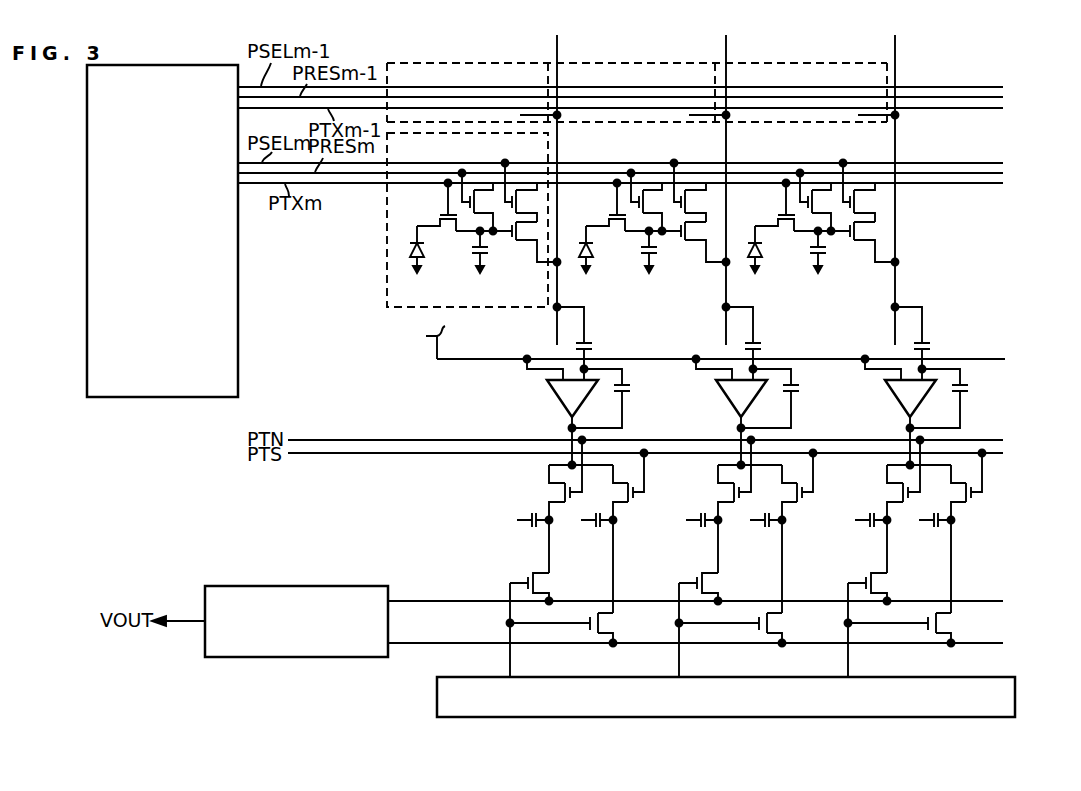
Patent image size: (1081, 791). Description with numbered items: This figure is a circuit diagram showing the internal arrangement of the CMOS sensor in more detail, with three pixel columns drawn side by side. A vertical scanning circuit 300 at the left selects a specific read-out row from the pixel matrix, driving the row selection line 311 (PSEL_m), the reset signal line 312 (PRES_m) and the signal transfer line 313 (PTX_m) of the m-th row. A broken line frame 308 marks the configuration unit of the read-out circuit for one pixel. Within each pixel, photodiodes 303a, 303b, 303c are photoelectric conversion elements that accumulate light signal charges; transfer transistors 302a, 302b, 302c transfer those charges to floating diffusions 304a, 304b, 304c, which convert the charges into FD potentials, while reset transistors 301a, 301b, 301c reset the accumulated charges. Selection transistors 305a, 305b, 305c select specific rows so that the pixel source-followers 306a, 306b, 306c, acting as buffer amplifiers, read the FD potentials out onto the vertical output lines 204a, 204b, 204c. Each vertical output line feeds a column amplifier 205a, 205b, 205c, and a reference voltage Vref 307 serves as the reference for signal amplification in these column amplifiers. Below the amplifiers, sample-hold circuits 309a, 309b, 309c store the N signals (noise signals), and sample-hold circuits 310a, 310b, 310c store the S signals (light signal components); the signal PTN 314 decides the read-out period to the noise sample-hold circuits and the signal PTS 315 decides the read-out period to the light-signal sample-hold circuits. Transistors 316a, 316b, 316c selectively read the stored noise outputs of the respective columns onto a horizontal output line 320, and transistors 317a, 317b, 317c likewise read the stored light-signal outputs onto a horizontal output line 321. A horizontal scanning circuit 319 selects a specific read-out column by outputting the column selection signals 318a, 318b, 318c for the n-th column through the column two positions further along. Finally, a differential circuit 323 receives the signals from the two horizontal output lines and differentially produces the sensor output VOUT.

The vertical output line 204a is at (557, 80).
The vertical output line 204b is at (744, 190).
The vertical output line 204c is at (913, 190).
The column amplifier 205a is at (552, 394).
The column amplifier 205b is at (710, 422).
The column amplifier 205c is at (879, 422).
The vertical scanning circuit 300 is at (238, 320).
The reset transistor 301a is at (479, 186).
The reset transistor 301b is at (619, 185).
The reset transistor 301c is at (788, 185).
The transfer transistor 302a is at (450, 216).
The transfer transistor 302b is at (593, 206).
The transfer transistor 302c is at (762, 206).
The photodiode 303a is at (425, 254).
The photodiode 303b is at (609, 256).
The photodiode 303c is at (777, 256).
The floating diffusion 304a is at (489, 256).
The floating diffusion 304b is at (661, 267).
The floating diffusion 304c is at (829, 267).
The selection transistor 305a is at (521, 186).
The selection transistor 305b is at (683, 178).
The selection transistor 305c is at (851, 178).
The pixel source-follower 306a is at (515, 245).
The pixel source-follower 306b is at (695, 254).
The pixel source-follower 306c is at (864, 254).
The reference voltage Vref 307 is at (437, 352).
The broken line frame 308 is at (388, 253).
The sample-hold circuit S/H(N) 309a is at (533, 529).
The sample-hold circuit S/H(N) 309b is at (694, 536).
The sample-hold circuit S/H(N) 309c is at (863, 536).
The sample-hold circuit S/H(S) 310a is at (594, 528).
The sample-hold circuit S/H(S) 310b is at (758, 540).
The sample-hold circuit S/H(S) 310c is at (927, 540).
The row selection line 311 is at (948, 163).
The reset signal line 312 is at (982, 173).
The signal transfer line 313 is at (1003, 183).
The PTN 314 is at (379, 429).
The PTS 315 is at (429, 452).
The transistor 316a is at (538, 585).
The transistor 316b is at (728, 589).
The transistor 316c is at (896, 589).
The transistor 317a is at (600, 625).
The transistor 317b is at (758, 629).
The transistor 317c is at (926, 629).
The selection signal Hn 318a is at (508, 662).
The selection signal Hn+1 318b is at (681, 630).
The selection signal Hn+2 318c is at (850, 630).
The horizontal scanning circuit 319 is at (437, 697).
The horizontal output line 320 is at (444, 592).
The horizontal output line 321 is at (441, 634).
The differential circuit 323 is at (350, 586).